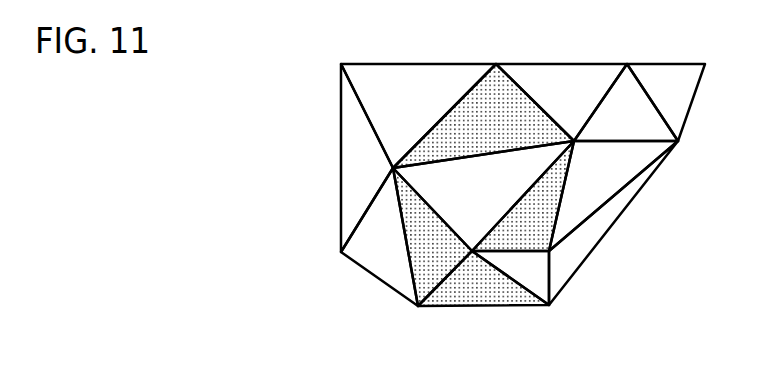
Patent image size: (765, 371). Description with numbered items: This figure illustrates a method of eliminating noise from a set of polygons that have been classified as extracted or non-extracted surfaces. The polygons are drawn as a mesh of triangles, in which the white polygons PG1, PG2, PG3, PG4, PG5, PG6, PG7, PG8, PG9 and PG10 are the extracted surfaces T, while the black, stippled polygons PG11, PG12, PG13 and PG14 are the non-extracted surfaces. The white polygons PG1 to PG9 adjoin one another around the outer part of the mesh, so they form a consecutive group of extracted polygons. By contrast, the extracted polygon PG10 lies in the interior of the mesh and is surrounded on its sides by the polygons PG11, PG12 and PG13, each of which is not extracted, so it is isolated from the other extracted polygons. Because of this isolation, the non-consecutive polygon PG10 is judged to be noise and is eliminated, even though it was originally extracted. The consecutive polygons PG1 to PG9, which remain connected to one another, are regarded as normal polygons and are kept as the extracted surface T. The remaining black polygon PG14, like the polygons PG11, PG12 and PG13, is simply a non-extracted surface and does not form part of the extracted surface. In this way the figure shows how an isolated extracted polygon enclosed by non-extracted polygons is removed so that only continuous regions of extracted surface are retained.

The white polygon PG1 is at (413, 82).
The white polygon PG2 is at (565, 82).
The white polygon PG3 is at (625, 98).
The white polygon PG4 is at (673, 82).
The white polygon PG5 is at (357, 155).
The white polygon PG6 is at (383, 257).
The white polygon PG7 is at (533, 277).
The white polygon PG8 is at (590, 235).
The white polygon PG9 is at (607, 175).
The extracted polygon PG10 is at (437, 178).
The black polygon PG11 is at (543, 228).
The black polygon PG12 is at (512, 88).
The black polygon PG13 is at (432, 267).
The black polygon PG14 is at (481, 286).